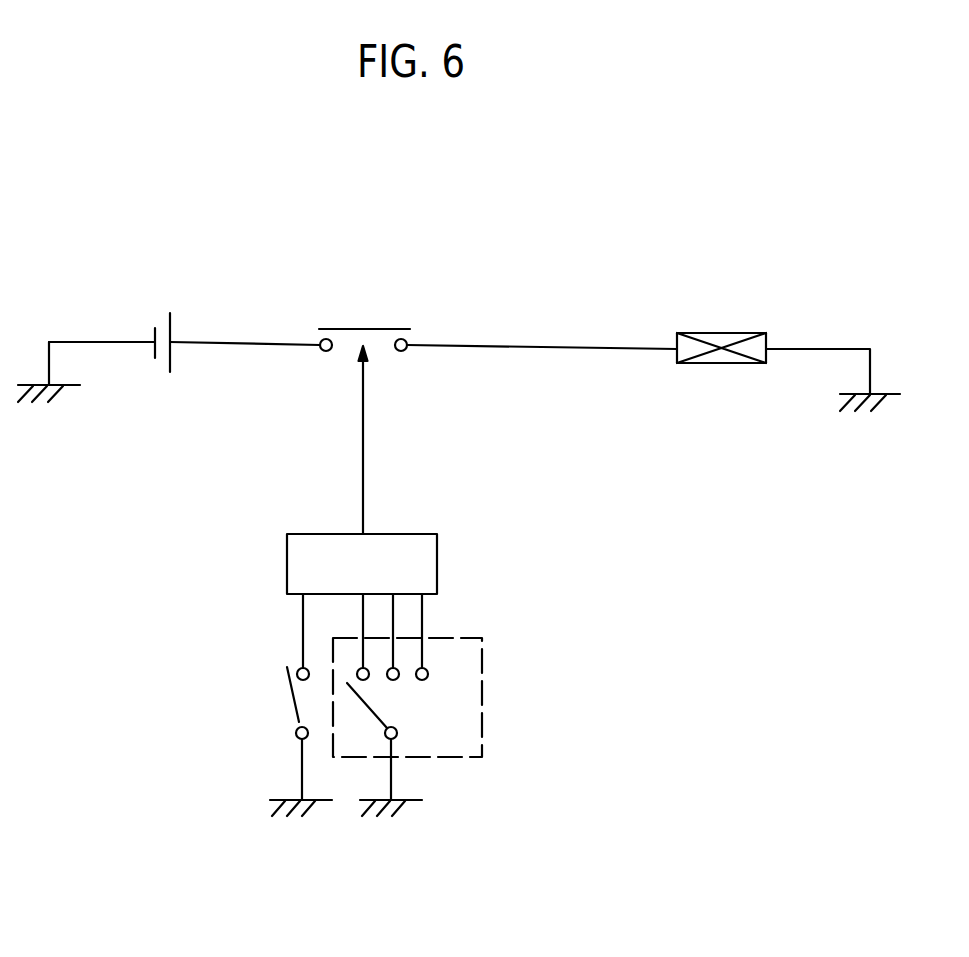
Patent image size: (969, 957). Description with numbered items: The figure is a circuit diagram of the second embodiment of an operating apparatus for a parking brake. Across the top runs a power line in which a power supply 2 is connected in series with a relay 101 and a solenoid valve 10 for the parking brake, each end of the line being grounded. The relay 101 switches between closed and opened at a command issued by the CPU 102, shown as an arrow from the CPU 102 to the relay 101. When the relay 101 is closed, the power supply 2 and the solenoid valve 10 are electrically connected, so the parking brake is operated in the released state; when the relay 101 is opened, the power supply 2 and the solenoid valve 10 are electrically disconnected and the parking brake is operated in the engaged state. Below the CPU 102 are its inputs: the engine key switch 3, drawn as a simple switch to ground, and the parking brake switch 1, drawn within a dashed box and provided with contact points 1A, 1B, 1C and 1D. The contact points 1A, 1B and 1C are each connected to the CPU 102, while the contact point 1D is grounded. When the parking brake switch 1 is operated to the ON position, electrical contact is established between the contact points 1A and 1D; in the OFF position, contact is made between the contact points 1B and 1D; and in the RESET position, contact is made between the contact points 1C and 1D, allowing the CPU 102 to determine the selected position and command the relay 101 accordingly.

The parking brake switch 1 is at (482, 710).
The contact point 1A is at (345, 673).
The contact point 1B is at (397, 680).
The contact point 1C is at (422, 653).
The contact point 1D is at (403, 740).
The power supply 2 is at (154, 374).
The engine key switch 3 is at (286, 696).
The solenoid valve 10 is at (720, 364).
The relay 101 is at (364, 317).
The CPU 102 is at (437, 549).